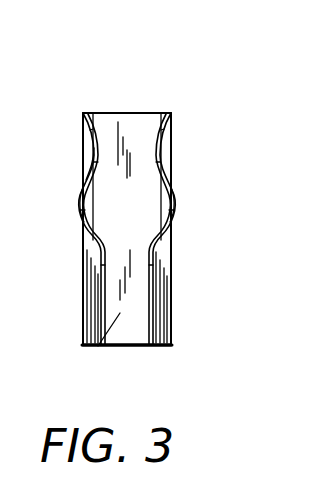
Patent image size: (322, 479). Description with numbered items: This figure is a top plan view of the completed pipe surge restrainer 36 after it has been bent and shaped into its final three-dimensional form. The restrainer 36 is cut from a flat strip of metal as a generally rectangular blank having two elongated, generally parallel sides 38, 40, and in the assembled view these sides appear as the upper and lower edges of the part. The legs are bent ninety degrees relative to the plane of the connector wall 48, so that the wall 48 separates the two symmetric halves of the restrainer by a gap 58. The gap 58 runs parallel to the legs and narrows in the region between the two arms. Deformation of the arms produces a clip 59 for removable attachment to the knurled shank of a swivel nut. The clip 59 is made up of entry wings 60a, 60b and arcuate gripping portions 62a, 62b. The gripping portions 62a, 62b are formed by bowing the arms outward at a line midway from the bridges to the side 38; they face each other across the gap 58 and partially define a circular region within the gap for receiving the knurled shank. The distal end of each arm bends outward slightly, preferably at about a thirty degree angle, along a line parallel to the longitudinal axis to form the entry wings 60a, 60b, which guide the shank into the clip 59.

The pipe surge restrainer 36 is at (193, 82).
The side 38 is at (110, 112).
The side 40 is at (122, 347).
The connector wall 48 is at (98, 346).
The gap 58 is at (132, 146).
The clip 59 is at (92, 150).
The entry wing 60a is at (83, 116).
The entry wing 60b is at (173, 115).
The arcuate gripping portion 62a is at (80, 200).
The arcuate gripping portion 62b is at (174, 186).